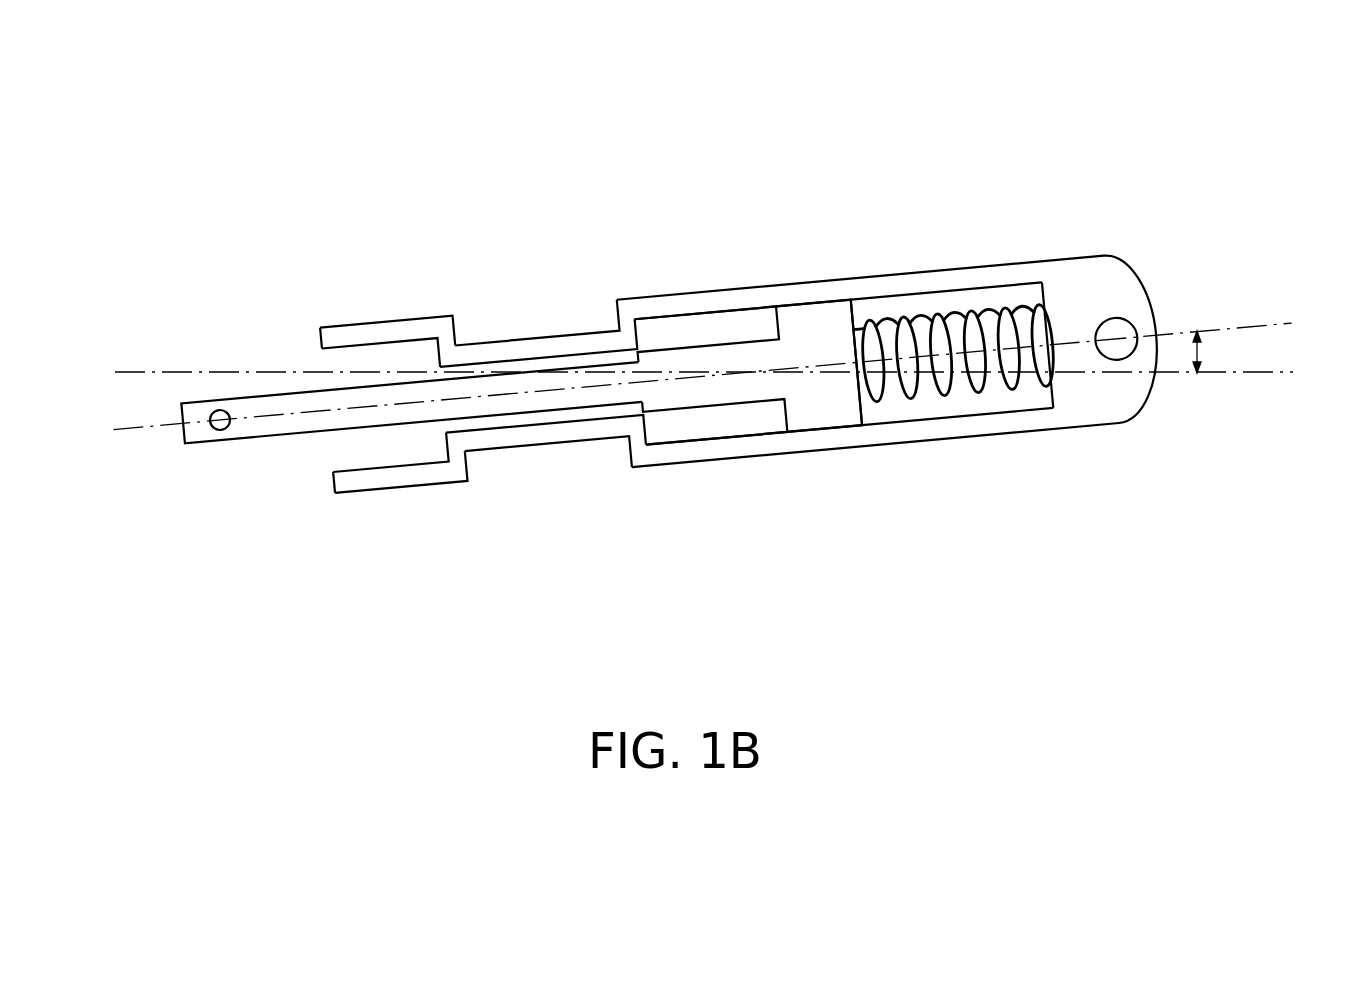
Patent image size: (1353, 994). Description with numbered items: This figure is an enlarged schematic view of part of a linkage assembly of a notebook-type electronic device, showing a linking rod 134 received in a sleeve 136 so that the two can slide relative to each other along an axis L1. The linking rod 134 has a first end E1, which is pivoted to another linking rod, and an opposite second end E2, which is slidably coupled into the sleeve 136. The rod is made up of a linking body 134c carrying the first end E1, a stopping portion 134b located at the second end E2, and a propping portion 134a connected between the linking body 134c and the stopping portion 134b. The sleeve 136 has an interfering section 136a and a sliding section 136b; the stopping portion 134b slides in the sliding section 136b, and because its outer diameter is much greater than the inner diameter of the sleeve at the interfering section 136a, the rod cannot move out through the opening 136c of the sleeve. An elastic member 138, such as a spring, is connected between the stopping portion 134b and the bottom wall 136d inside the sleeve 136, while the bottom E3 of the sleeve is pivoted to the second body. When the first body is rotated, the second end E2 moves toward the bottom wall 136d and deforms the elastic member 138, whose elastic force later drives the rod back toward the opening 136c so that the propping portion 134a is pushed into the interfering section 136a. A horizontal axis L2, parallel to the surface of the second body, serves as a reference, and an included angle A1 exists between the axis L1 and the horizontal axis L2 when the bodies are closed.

The linking rod 134 is at (520, 411).
The propping portion 134a is at (702, 393).
The stopping portion 134b is at (791, 378).
The linking body 134c is at (410, 426).
The sleeve 136 is at (763, 290).
The interfering section 136a is at (540, 345).
The sliding section 136b is at (700, 310).
The opening 136c is at (375, 373).
The bottom wall 136d is at (1028, 303).
The elastic member 138 is at (922, 315).
The first end E1 is at (204, 364).
The second end E2 is at (838, 311).
The bottom E3 is at (1157, 316).
The axis L1 is at (710, 350).
The horizontal axis L2 is at (730, 351).
The included angle A1 is at (1202, 353).